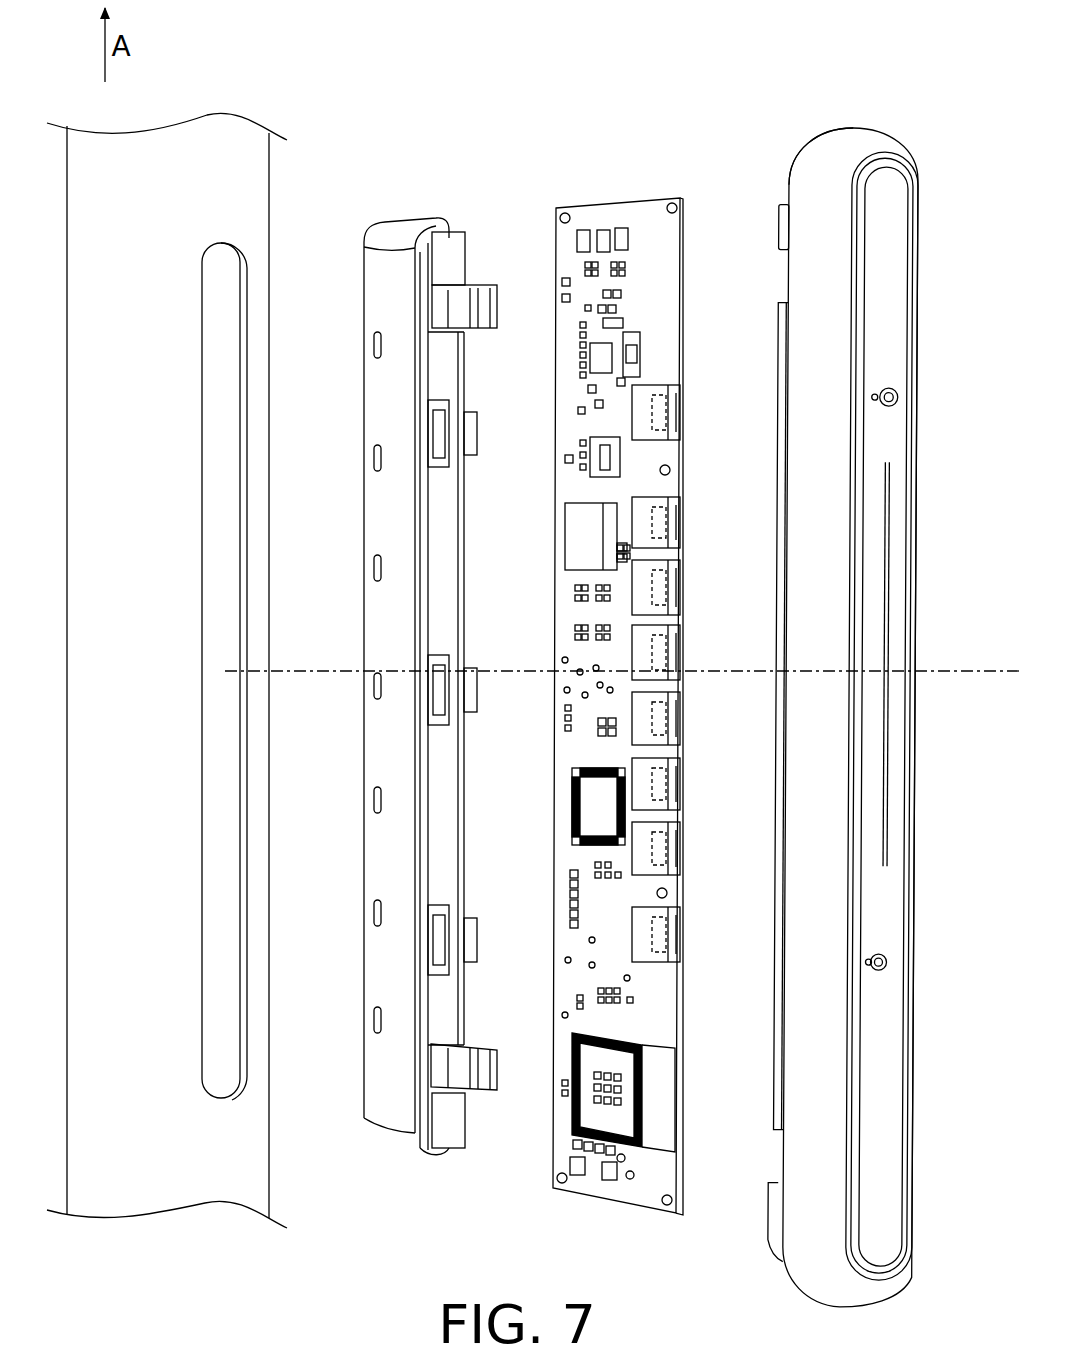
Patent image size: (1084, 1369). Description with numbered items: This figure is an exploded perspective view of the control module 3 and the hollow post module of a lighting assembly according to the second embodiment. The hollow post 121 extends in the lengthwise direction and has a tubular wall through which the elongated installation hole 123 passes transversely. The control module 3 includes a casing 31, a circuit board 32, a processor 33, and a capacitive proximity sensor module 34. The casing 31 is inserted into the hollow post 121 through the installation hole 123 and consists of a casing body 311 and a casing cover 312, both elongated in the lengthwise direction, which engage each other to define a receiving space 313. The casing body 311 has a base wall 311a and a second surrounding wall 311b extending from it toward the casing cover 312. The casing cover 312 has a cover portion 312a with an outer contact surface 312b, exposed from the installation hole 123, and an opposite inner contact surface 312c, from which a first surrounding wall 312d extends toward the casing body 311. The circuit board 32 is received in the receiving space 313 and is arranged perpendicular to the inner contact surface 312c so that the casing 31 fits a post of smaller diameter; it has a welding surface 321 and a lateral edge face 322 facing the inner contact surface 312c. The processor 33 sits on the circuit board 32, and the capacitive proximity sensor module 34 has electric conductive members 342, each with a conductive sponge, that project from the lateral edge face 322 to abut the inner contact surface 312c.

The control module 3 is at (666, 88).
The casing 31 is at (636, 168).
The circuit board 32 is at (579, 206).
The processor 33 is at (588, 513).
The capacitive proximity sensor module 34 is at (690, 955).
The hollow post 121 is at (231, 140).
The installation hole 123 is at (226, 1050).
The casing body 311 is at (405, 212).
The base wall 311a is at (376, 268).
The second surrounding wall 311b is at (413, 236).
The casing cover 312 is at (875, 132).
The cover portion 312a is at (870, 158).
The outer contact surface 312b is at (892, 183).
The inner contact surface 312c is at (792, 168).
The first surrounding wall 312d is at (780, 215).
The receiving space 313 is at (511, 1162).
The welding surface 321 is at (592, 1182).
The lateral edge face 322 is at (683, 754).
The electric conductive member 342 is at (680, 846).